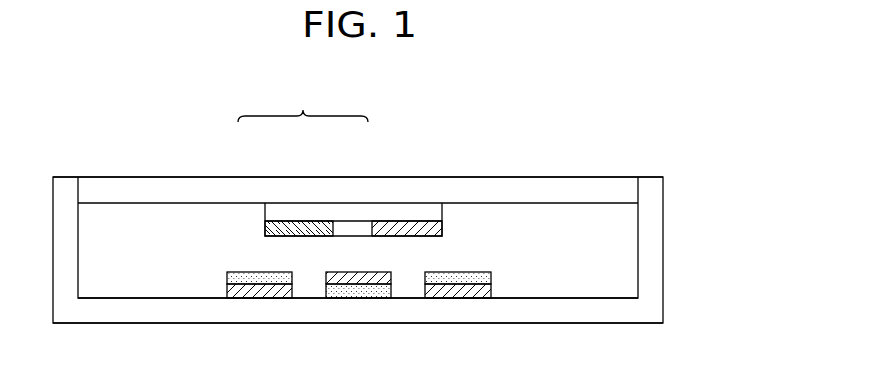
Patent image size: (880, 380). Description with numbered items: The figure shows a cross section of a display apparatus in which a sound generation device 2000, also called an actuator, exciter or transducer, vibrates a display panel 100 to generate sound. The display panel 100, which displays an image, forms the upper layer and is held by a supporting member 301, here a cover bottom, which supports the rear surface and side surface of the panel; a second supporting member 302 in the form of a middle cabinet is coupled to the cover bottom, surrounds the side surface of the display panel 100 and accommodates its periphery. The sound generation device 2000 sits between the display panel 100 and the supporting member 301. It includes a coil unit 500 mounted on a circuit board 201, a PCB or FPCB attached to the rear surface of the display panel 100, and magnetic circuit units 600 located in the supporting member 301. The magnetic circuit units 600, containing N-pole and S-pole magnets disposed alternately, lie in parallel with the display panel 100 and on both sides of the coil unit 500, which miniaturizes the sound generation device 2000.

The display panel 100 is at (177, 193).
The circuit board 201 is at (402, 212).
The coil unit 500 is at (392, 230).
The magnetic circuit unit 600 is at (233, 293).
The sound generation device 2000 is at (303, 105).
The supporting member 301 is at (652, 313).
The second supporting member 302 is at (652, 248).